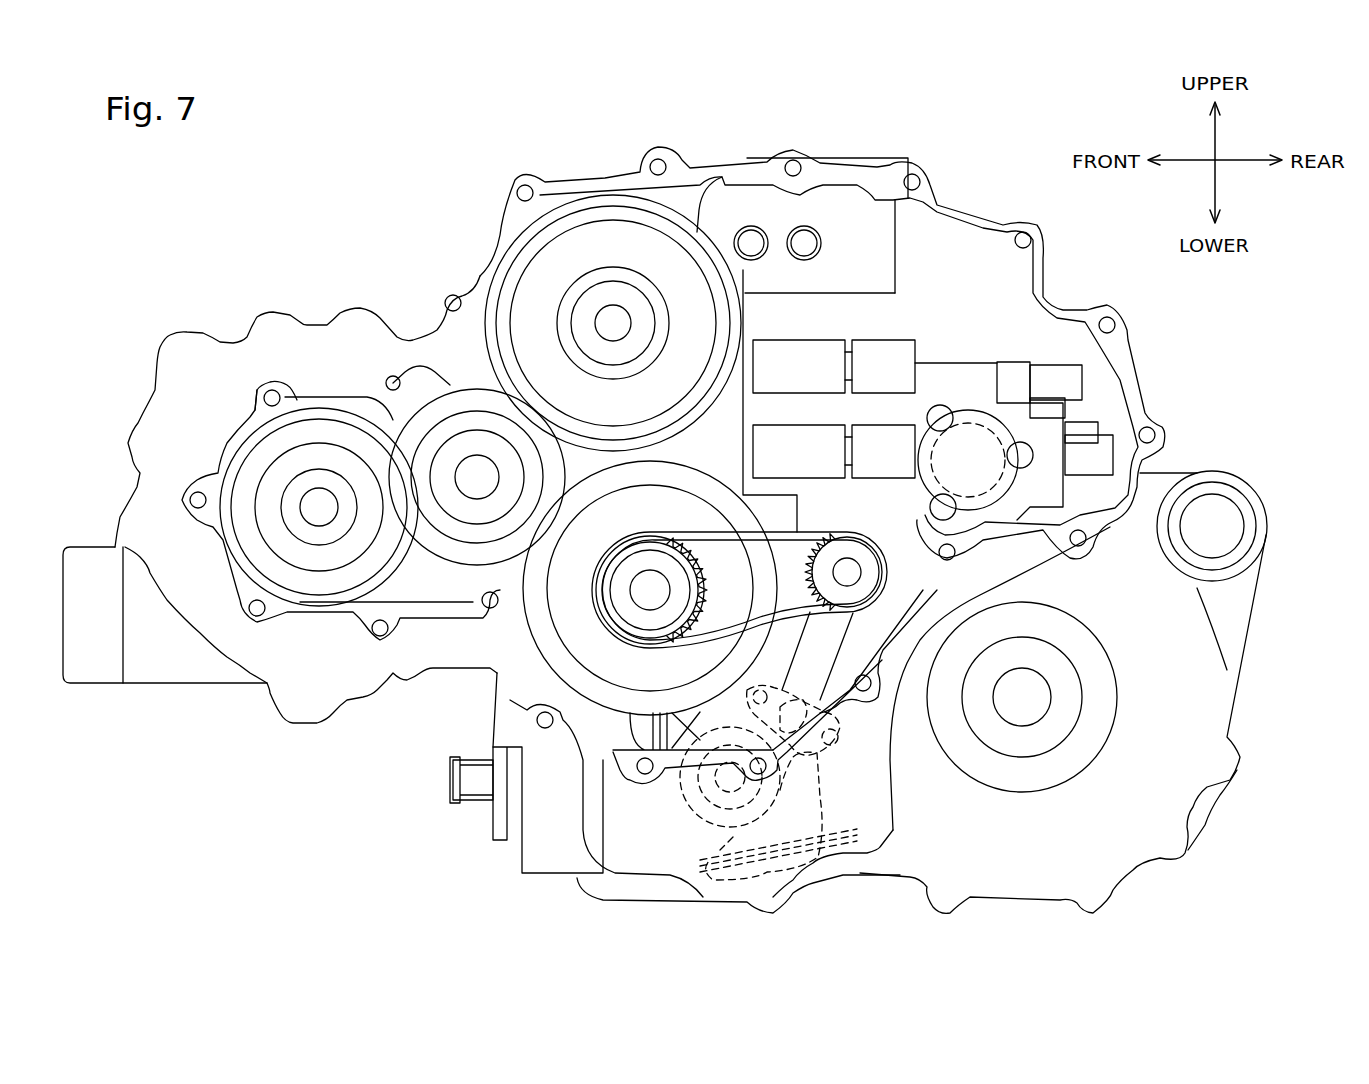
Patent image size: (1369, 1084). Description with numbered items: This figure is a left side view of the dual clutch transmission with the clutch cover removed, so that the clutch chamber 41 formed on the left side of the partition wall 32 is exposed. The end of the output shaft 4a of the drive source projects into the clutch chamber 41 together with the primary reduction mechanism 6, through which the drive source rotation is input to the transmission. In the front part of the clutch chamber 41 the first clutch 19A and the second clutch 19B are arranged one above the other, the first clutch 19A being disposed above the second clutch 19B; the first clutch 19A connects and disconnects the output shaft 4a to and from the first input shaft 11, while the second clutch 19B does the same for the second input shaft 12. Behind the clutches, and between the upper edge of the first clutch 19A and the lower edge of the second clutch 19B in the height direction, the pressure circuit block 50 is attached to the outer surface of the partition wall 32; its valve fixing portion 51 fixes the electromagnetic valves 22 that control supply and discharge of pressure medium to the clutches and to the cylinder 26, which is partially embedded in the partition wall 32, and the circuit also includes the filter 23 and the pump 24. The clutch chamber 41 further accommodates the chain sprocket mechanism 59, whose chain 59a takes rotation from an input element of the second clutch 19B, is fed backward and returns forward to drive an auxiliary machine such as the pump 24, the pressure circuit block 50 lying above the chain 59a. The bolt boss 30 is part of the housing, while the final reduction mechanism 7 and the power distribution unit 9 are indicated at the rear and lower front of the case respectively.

The output shaft 4a is at (318, 510).
The primary reduction mechanism 6 is at (385, 582).
The final reduction mechanism 7 is at (1192, 791).
The power distribution unit 9 is at (428, 802).
The first input shaft 11 is at (613, 323).
The second input shaft 12 is at (640, 590).
The first clutch 19A is at (520, 238).
The second clutch 19B is at (622, 716).
The valve 22 is at (1082, 378).
The filter 23 is at (968, 425).
The pump 24 is at (870, 573).
The cylinder 26 is at (804, 226).
The bolt boss 30 is at (265, 378).
The partition wall 32 is at (380, 428).
The clutch chamber 41 is at (480, 368).
The pressure circuit block 50 is at (703, 190).
The valve fixing portion 51 is at (847, 310).
The chain sprocket mechanism 59 is at (640, 657).
The chain 59a is at (595, 597).